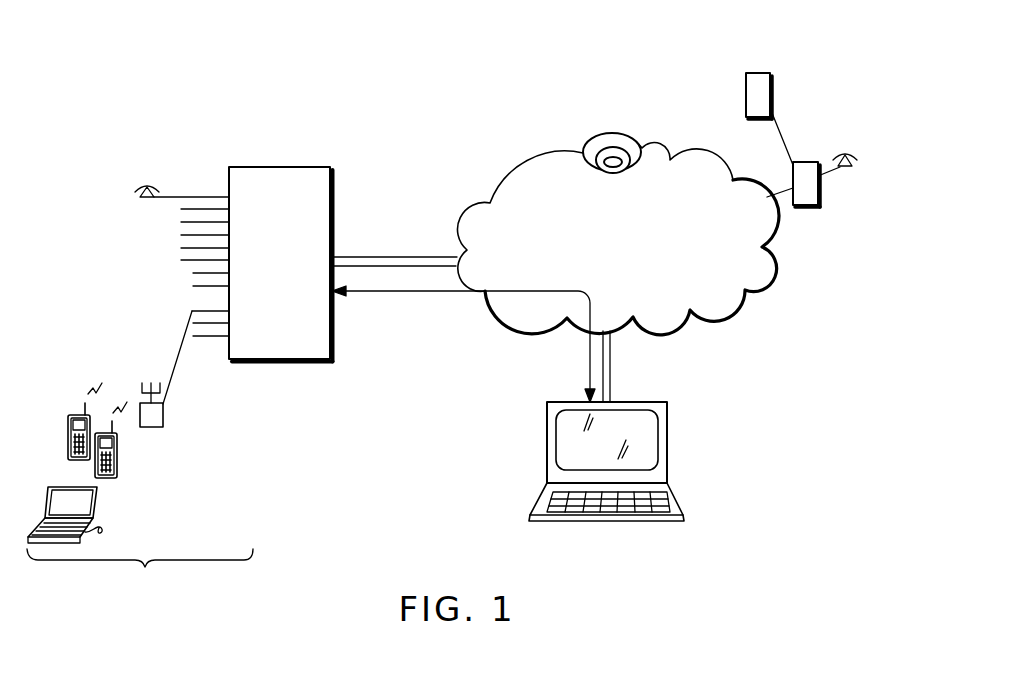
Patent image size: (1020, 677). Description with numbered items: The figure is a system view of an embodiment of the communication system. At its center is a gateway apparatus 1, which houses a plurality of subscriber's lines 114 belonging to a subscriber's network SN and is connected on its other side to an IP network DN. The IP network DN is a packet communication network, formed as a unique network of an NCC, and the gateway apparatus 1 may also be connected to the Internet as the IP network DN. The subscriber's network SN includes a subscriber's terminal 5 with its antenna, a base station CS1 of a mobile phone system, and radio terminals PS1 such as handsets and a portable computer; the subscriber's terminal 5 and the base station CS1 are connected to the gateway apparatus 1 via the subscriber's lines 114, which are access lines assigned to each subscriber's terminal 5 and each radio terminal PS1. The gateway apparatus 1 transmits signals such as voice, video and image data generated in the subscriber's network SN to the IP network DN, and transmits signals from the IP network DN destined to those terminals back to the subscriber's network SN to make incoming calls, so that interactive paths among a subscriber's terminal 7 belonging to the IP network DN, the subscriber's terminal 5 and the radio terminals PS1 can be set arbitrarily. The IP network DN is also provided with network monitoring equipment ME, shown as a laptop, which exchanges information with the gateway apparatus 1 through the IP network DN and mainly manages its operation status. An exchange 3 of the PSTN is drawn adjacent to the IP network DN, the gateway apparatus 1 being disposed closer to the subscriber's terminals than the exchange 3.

The gateway apparatus 1 is at (293, 167).
The subscriber's lines 114 is at (199, 196).
The subscriber's terminal 5 is at (147, 200).
The exchange 3 is at (766, 73).
The subscriber's terminal 7 is at (845, 169).
The IP network DN is at (690, 160).
The network monitoring equipment ME is at (667, 456).
The base station CS1 is at (151, 389).
The radio terminal PS1 is at (77, 456).
The subscriber's network SN is at (140, 573).